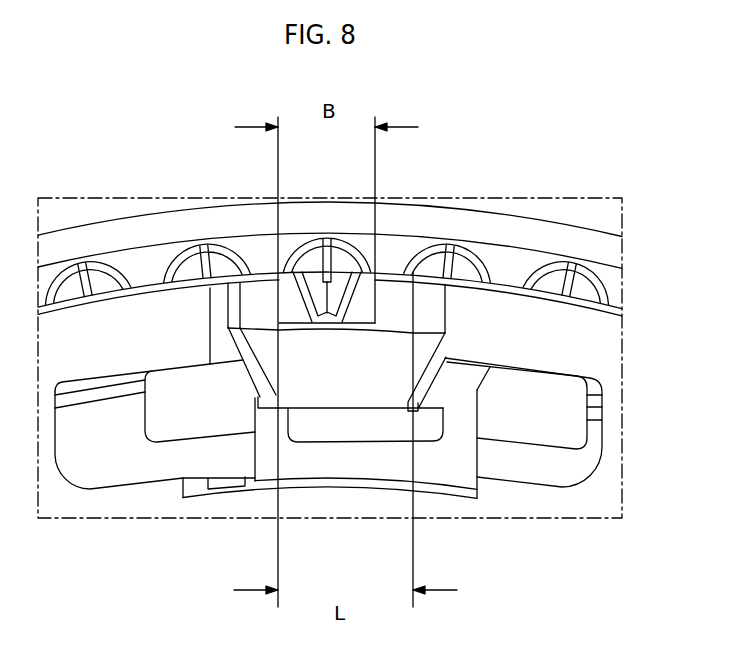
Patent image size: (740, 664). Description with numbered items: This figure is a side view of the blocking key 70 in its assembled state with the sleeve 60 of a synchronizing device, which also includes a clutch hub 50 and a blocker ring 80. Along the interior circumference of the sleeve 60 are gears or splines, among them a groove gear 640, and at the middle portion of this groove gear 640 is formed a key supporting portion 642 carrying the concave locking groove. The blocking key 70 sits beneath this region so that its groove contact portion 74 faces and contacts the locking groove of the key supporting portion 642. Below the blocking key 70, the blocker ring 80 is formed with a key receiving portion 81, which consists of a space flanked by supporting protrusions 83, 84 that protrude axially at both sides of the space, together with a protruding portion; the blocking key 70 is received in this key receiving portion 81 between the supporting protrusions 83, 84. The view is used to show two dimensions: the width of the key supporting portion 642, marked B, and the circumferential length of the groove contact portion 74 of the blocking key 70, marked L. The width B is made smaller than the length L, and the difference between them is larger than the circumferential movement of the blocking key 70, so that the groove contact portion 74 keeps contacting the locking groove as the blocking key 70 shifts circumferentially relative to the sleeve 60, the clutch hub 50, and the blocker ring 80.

The clutch hub 50 is at (607, 342).
The sleeve 60 is at (578, 237).
The groove gear 640 is at (313, 292).
The key supporting portion 642 is at (367, 300).
The blocking key 70 is at (449, 400).
The groove contact portion 74 is at (400, 298).
The blocker ring 80 is at (123, 467).
The key receiving portion 81 is at (436, 446).
The supporting protrusion 83 is at (182, 422).
The supporting protrusion 84 is at (573, 423).